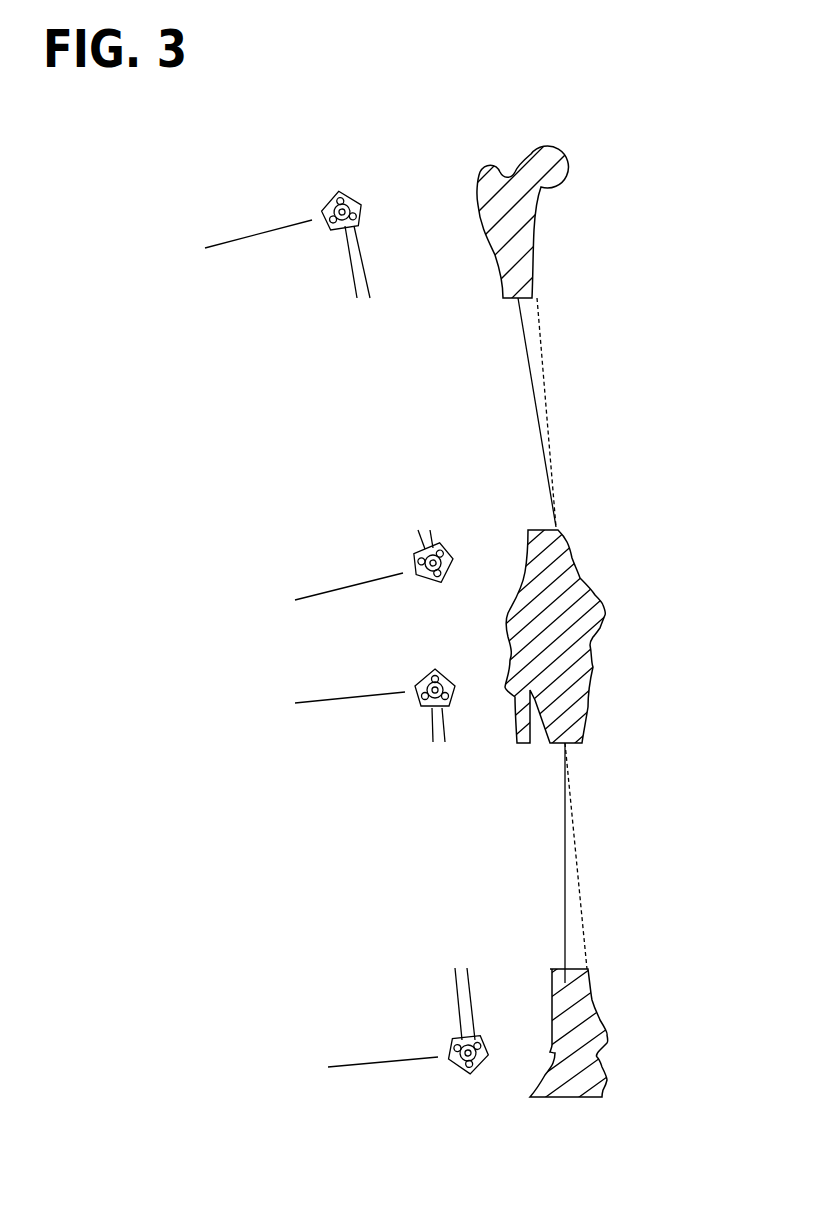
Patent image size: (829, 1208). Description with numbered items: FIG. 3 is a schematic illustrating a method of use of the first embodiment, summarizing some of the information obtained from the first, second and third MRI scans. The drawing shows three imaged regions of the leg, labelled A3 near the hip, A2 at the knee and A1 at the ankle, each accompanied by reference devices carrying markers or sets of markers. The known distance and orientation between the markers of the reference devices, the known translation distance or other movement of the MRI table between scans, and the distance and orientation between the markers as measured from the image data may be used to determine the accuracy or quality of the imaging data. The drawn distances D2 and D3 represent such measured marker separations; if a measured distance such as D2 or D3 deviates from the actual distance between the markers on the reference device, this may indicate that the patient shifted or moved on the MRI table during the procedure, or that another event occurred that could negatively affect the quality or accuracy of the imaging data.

The ankle (distal tibia) segment A1 is at (612, 1072).
The knee segment A2 is at (612, 605).
The femur (hip) segment A3 is at (567, 153).
The distance between pins of femur segment D2 is at (228, 242).
The distance between pins of tibia segment D3 is at (350, 1063).